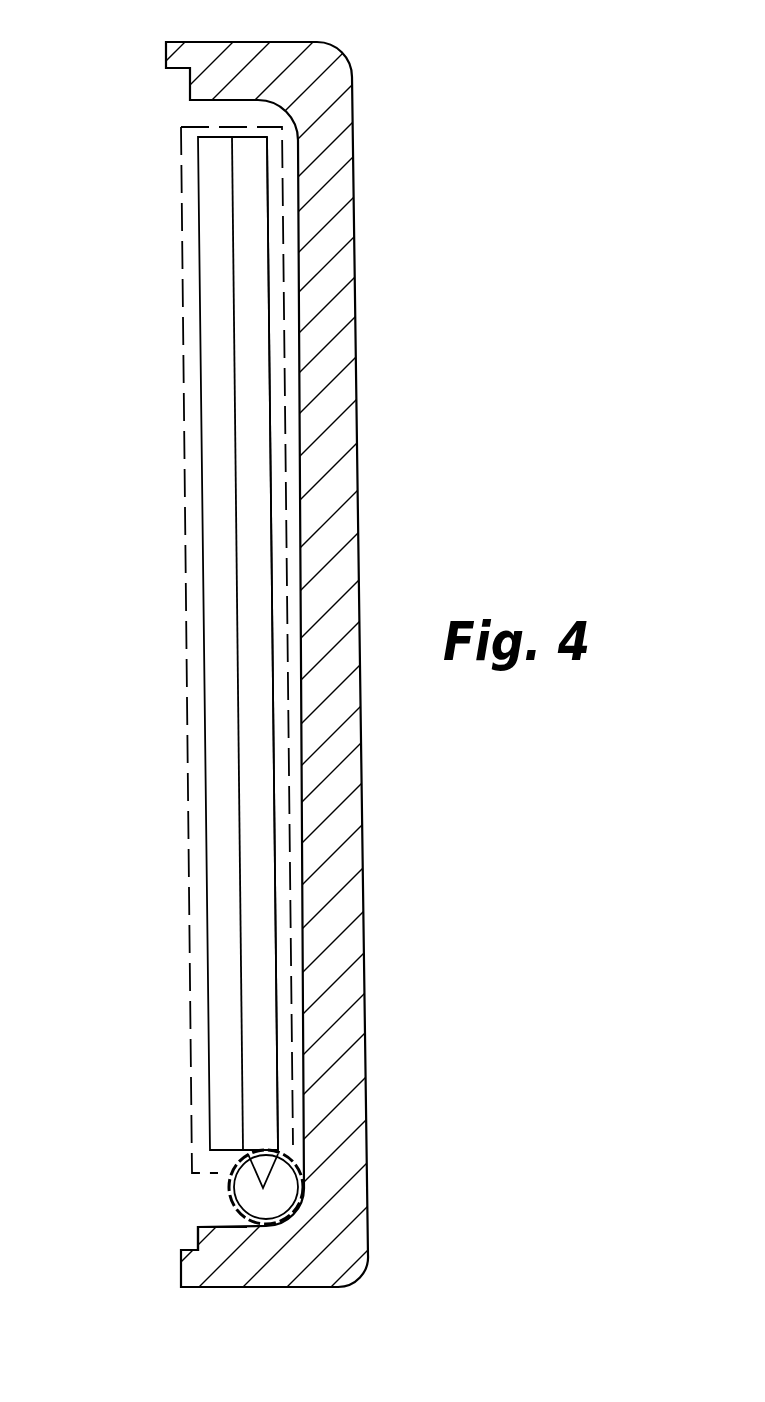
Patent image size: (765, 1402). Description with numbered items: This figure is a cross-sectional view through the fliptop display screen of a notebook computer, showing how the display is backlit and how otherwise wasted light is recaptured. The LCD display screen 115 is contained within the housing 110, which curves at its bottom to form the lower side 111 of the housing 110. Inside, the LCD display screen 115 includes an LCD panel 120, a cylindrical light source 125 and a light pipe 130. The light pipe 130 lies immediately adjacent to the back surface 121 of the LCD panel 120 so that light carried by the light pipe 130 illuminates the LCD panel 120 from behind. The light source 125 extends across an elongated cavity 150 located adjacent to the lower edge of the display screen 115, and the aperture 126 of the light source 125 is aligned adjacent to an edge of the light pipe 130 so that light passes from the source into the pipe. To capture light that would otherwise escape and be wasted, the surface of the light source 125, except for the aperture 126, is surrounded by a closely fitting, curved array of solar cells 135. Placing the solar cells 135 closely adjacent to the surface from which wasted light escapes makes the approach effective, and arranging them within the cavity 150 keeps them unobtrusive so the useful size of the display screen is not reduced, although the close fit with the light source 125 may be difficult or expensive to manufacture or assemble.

The housing 110 is at (366, 234).
The lower side of housing 111 is at (308, 1298).
The LCD display screen 115 is at (178, 301).
The LCD panel 120 is at (213, 403).
The back surface of LCD panel 121 is at (235, 463).
The cylindrical light source 125 is at (247, 1183).
The aperture 126 is at (270, 1135).
The light pipe 130 is at (257, 923).
The curved array of solar cells 135 is at (227, 1167).
The elongated cavity 150 is at (200, 1207).